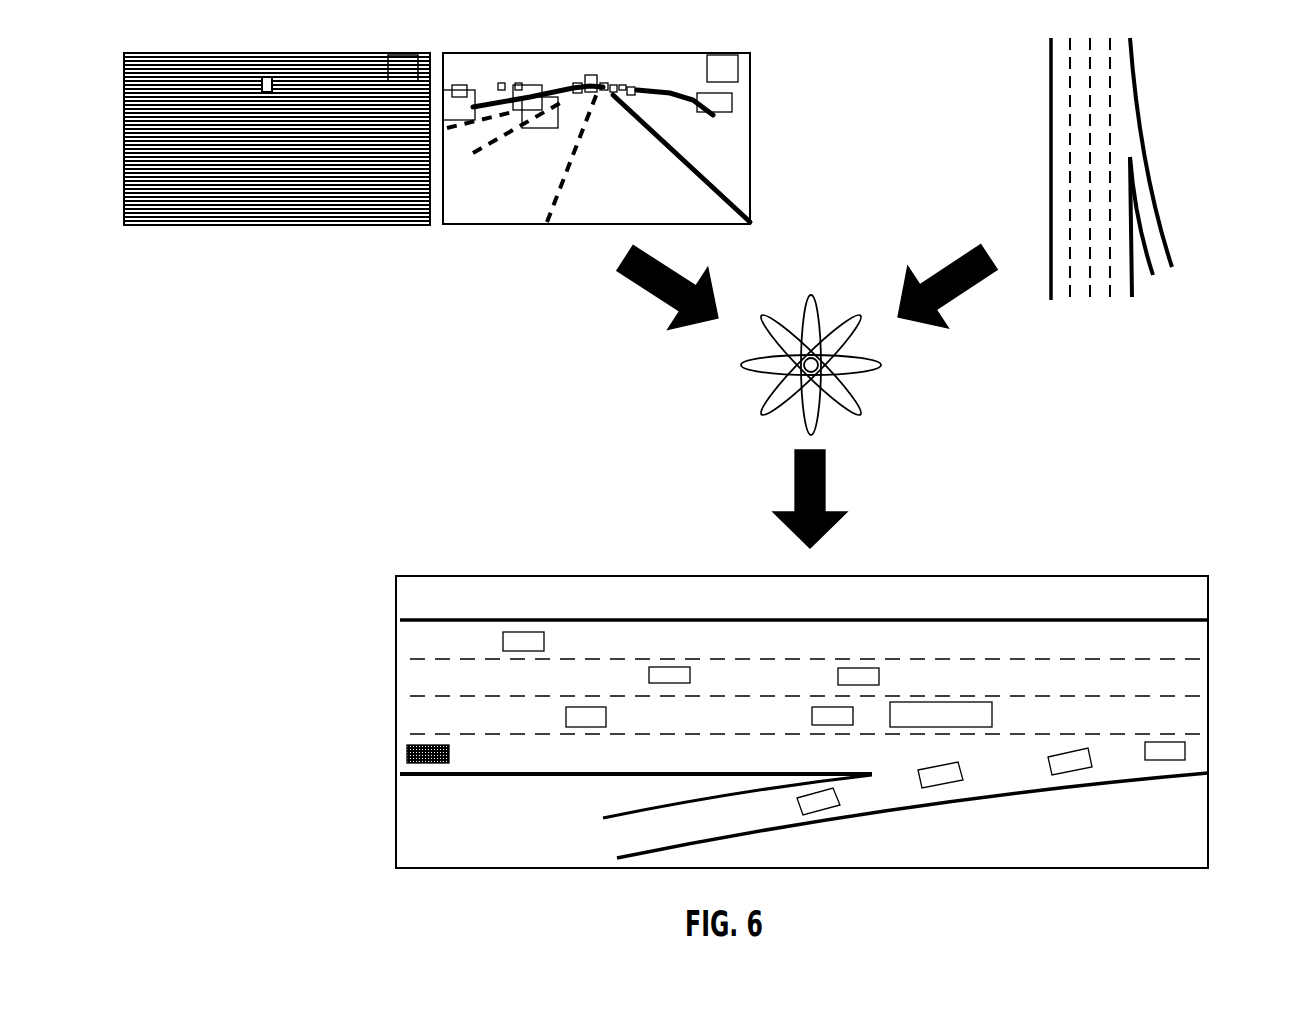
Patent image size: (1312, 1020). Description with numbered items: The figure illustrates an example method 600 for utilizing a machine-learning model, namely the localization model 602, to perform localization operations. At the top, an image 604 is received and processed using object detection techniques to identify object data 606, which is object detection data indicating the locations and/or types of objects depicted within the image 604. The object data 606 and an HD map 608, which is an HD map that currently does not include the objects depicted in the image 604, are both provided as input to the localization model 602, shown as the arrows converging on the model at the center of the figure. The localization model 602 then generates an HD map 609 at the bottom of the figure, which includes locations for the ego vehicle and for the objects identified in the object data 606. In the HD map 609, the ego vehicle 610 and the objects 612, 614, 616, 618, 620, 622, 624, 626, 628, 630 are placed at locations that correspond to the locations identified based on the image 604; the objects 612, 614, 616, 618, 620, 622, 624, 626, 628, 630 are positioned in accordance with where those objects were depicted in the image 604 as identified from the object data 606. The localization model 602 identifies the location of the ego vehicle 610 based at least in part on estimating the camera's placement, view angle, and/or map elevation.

The method 600 is at (256, 861).
The localization model 602 is at (759, 375).
The image 604 is at (277, 120).
The object data 606 is at (596, 120).
The HD map 608 is at (1164, 169).
The HD map 609 is at (1076, 560).
The ego vehicle 610 is at (429, 745).
The object 612 is at (515, 652).
The object 614 is at (595, 707).
The object 616 is at (672, 667).
The object 618 is at (797, 800).
The object 620 is at (833, 725).
The object 622 is at (863, 668).
The object 624 is at (948, 702).
The object 626 is at (938, 767).
The object 628 is at (1077, 750).
The object 630 is at (1158, 742).